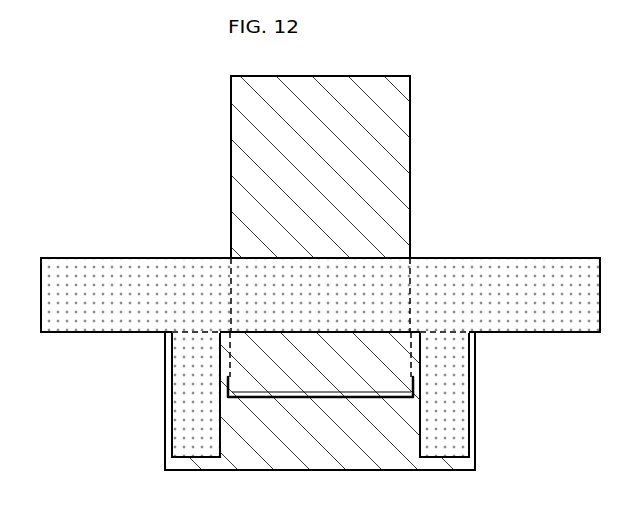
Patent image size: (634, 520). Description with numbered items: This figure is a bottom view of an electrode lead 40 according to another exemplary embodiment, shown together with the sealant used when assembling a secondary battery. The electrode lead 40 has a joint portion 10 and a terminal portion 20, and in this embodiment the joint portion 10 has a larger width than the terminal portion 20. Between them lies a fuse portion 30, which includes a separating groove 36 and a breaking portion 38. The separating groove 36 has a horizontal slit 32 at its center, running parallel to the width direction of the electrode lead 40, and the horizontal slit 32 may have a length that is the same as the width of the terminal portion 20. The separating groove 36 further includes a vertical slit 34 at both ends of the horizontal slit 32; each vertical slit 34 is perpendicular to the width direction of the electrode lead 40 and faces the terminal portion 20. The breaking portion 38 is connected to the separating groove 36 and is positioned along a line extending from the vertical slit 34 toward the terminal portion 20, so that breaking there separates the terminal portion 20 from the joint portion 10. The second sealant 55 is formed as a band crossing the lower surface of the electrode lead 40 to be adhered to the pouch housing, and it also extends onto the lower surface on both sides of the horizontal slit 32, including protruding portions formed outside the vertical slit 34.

The joint portion 10 is at (235, 464).
The terminal portion 20 is at (240, 147).
The fuse portion 30 is at (78, 355).
The horizontal slit 32 is at (247, 402).
The vertical slit 34 is at (230, 380).
The separating groove 36 is at (122, 380).
The breaking portion 38 is at (230, 350).
The electrode lead 40 is at (55, 444).
The second sealant 55 is at (538, 262).